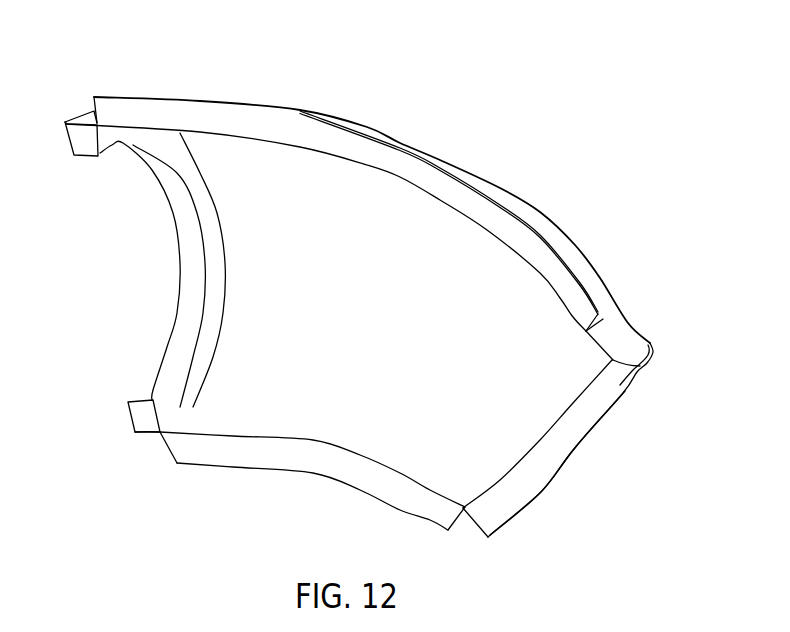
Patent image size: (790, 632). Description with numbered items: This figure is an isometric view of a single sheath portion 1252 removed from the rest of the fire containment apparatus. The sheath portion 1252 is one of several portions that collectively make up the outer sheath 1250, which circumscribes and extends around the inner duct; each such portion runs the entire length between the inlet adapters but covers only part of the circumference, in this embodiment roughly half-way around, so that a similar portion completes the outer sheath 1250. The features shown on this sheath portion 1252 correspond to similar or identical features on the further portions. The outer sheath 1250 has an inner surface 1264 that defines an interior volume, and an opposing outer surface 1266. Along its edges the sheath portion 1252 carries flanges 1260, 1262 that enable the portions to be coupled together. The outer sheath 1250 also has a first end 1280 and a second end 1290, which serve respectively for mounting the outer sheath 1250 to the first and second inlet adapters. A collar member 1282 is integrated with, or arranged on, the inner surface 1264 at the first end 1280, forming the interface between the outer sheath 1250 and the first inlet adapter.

The outer sheath 1250 is at (102, 82).
The sheath portion 1252 is at (195, 117).
The flange 1260 is at (262, 114).
The flange 1262 is at (237, 457).
The inner surface 1264 is at (320, 420).
The outer surface 1266 is at (536, 210).
The first end 1280 is at (82, 117).
The collar member 1282 is at (174, 344).
The second end 1290 is at (638, 331).